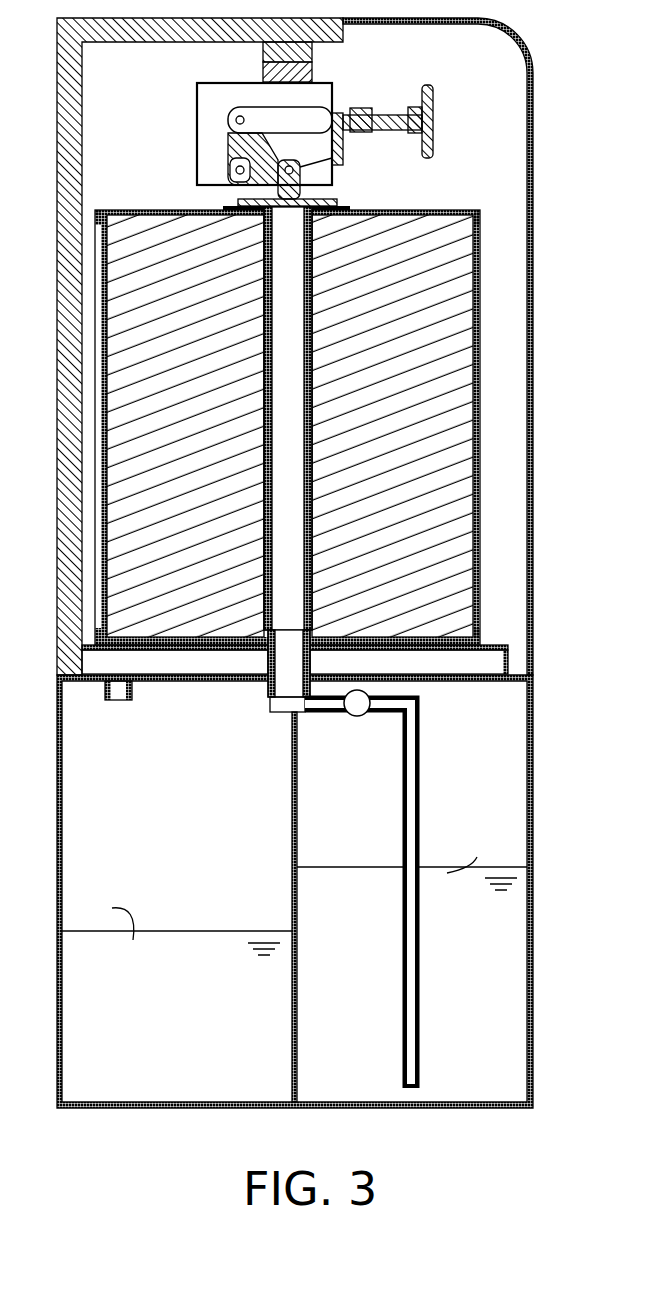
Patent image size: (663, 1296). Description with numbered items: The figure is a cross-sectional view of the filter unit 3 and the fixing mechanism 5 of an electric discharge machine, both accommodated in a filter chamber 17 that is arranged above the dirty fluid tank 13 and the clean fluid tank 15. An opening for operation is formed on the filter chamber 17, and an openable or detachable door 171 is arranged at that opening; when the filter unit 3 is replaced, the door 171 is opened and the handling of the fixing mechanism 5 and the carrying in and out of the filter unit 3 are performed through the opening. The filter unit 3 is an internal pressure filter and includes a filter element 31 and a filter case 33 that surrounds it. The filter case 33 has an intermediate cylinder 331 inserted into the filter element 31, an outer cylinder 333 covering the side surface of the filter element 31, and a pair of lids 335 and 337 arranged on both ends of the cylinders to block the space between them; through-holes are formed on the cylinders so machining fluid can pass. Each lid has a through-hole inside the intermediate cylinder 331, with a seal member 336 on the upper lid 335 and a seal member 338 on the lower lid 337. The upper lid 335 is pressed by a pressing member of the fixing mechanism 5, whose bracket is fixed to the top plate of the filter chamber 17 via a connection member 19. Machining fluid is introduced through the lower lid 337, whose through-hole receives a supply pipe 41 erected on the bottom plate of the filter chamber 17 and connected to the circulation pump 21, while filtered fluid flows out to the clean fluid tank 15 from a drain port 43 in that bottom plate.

The filter unit 3 is at (452, 177).
The fixing mechanism 5 is at (447, 92).
The dirty fluid tank 13 is at (368, 821).
The clean fluid tank 15 is at (188, 821).
The filter chamber 17 is at (57, 50).
The connection member 19 is at (265, 48).
The circulation pump 21 is at (350, 717).
The filter element 31 is at (437, 255).
The filter case 33 is at (440, 198).
The supply pipe 41 is at (268, 687).
The drain port 43 is at (119, 702).
The door 171 is at (538, 95).
The intermediate cylinder 331 is at (265, 229).
The outer cylinder 333 is at (478, 338).
The lid 335 is at (142, 209).
The seal member 336 is at (358, 192).
The lid 337 is at (478, 633).
The seal member 338 is at (346, 648).